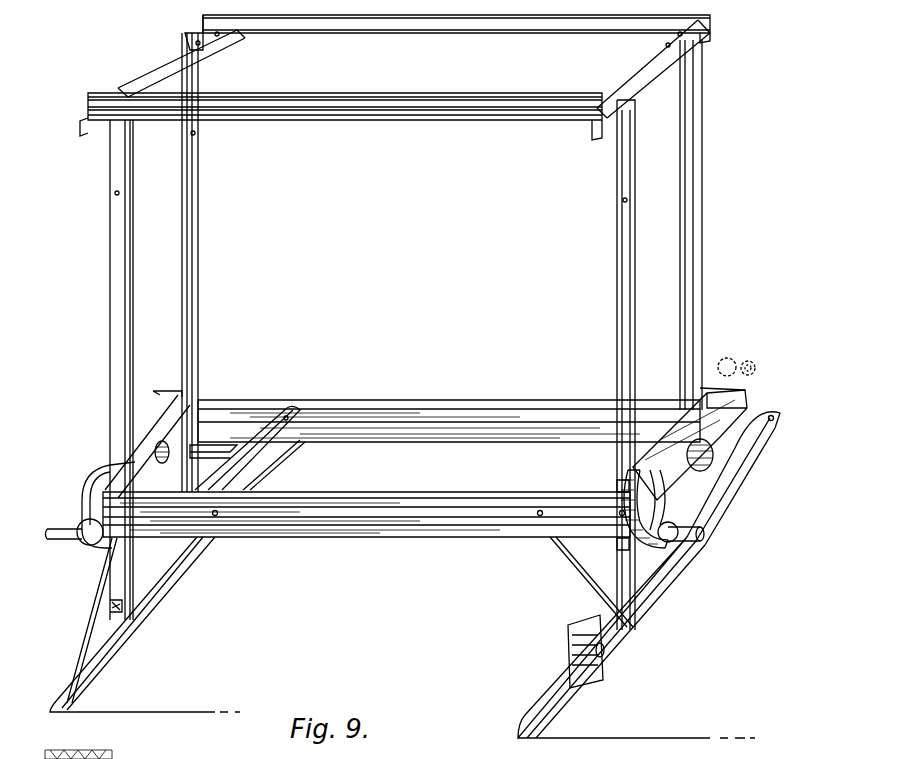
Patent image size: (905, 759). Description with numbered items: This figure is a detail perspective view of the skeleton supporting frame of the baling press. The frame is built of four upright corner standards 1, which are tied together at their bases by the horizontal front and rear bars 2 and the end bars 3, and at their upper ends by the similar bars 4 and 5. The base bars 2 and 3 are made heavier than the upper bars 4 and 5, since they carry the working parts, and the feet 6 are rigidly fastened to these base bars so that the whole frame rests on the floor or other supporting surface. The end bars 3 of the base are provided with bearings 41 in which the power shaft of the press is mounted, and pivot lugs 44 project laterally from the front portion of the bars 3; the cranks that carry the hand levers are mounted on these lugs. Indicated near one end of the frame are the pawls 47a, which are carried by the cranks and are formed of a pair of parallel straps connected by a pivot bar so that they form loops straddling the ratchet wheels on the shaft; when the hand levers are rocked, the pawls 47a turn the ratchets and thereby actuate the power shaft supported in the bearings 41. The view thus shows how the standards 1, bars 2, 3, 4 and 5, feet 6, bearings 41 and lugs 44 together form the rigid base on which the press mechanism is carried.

The corner standards 1 is at (123, 323).
The front and rear base bars 2 is at (452, 407).
The end bars 3 is at (147, 430).
The upper bars 4 is at (450, 25).
The upper bars 5 is at (156, 73).
The feet 6 is at (287, 445).
The bearings 41 is at (166, 465).
The pivot lugs 44 is at (70, 540).
The pawls 47a is at (712, 360).